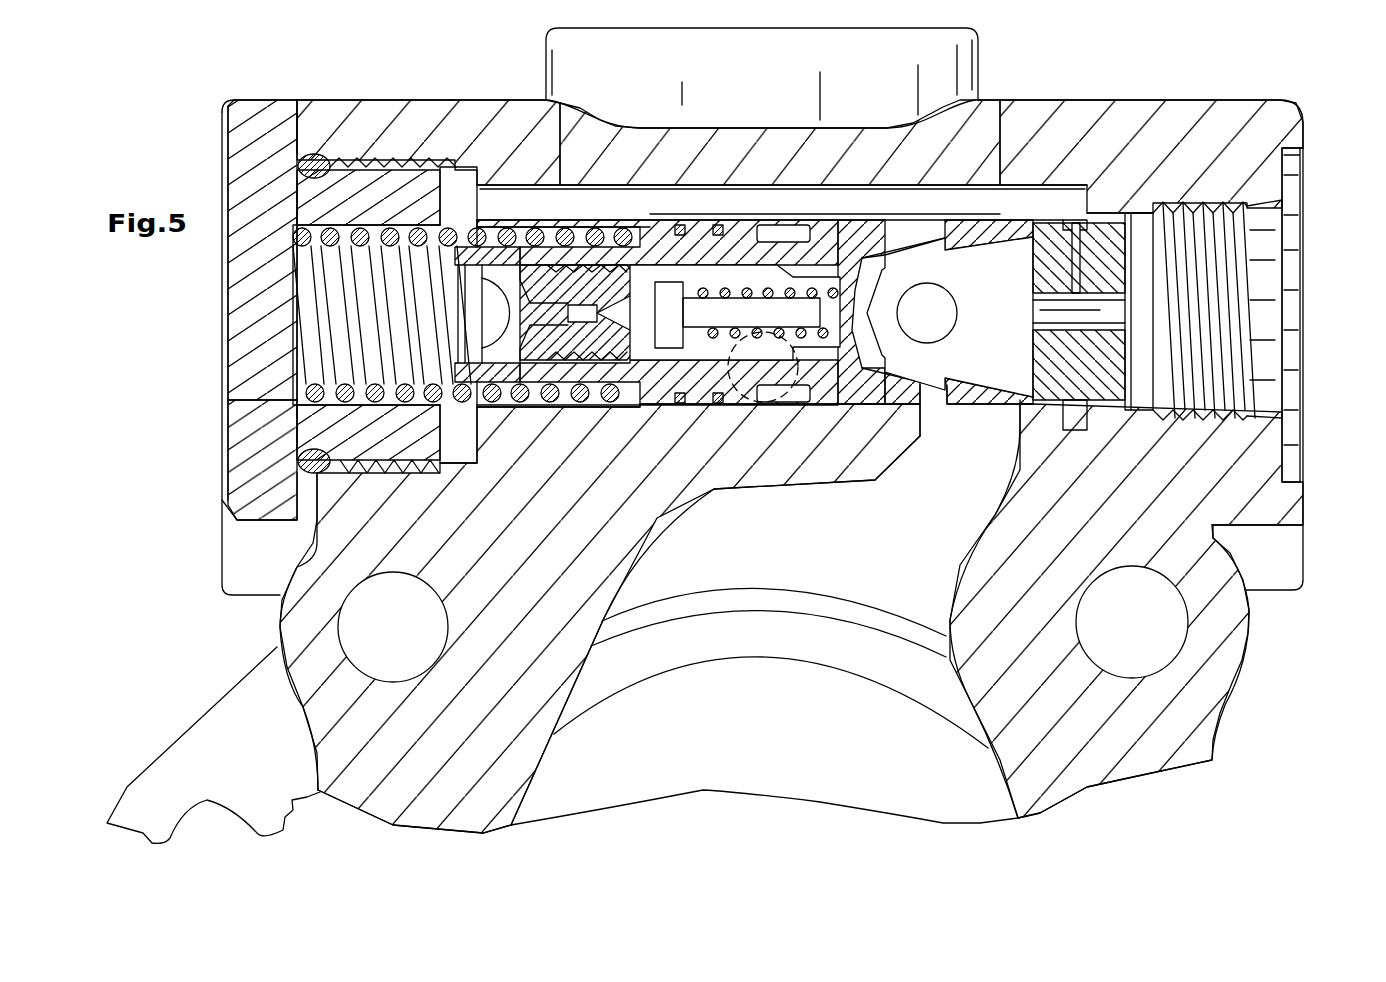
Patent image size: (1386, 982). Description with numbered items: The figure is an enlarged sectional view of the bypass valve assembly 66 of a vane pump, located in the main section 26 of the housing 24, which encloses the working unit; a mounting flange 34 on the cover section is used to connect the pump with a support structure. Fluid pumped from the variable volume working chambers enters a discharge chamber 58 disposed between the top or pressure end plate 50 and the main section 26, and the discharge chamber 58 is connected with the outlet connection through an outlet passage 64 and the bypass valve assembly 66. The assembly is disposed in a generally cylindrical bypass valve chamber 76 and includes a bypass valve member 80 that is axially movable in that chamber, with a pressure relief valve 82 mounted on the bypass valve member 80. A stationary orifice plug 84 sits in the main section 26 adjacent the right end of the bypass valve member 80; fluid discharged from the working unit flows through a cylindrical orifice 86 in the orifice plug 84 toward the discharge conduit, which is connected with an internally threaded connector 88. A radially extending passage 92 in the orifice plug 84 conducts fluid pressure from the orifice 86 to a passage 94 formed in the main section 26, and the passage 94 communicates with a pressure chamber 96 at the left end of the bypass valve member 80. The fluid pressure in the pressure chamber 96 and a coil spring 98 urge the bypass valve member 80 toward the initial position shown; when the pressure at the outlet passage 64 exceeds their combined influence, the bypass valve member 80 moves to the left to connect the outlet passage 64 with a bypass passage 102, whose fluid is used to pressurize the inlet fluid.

The housing 24 is at (298, 738).
The main section 26 is at (268, 613).
The mounting flange 34 is at (135, 797).
The pressure end plate 50 is at (948, 775).
The discharge chamber 58 is at (914, 737).
The outlet passage 64 is at (967, 460).
The bypass valve assembly 66 is at (495, 130).
The bypass valve chamber 76 is at (680, 400).
The bypass valve member 80 is at (817, 210).
The pressure relief valve 82 is at (622, 400).
The orifice plug 84 is at (1102, 212).
The orifice 86 is at (1105, 318).
The internally threaded connector 88 is at (1197, 368).
The radially extending passage 92 is at (1077, 262).
The passage 94 is at (653, 200).
The pressure chamber 96 is at (460, 183).
The coil spring 98 is at (345, 358).
The bypass passage 102 is at (798, 380).